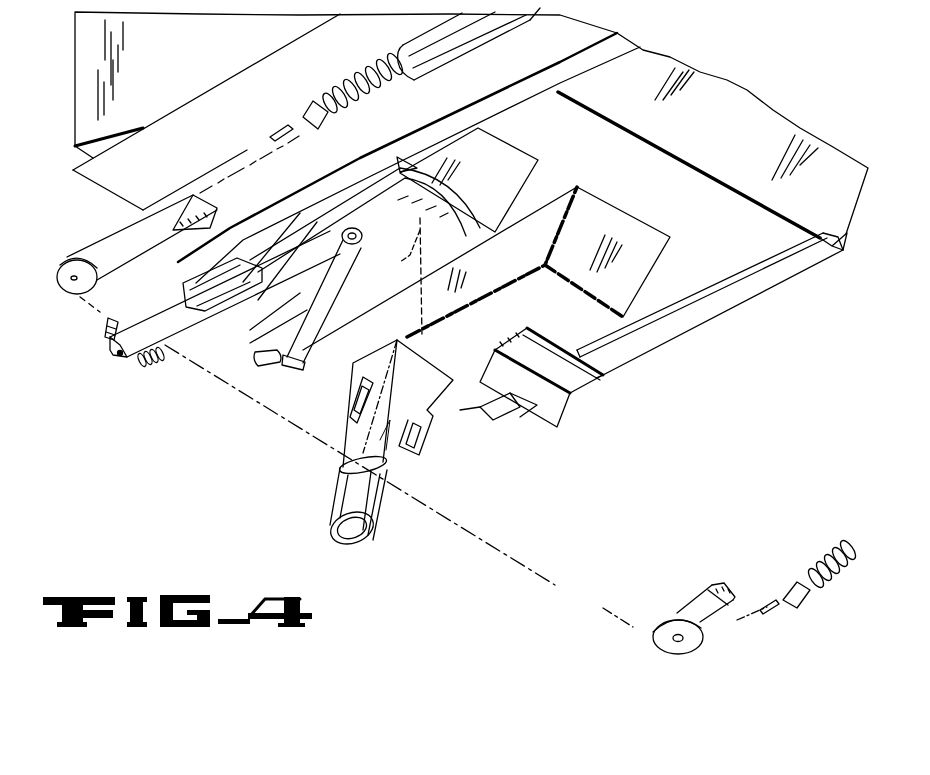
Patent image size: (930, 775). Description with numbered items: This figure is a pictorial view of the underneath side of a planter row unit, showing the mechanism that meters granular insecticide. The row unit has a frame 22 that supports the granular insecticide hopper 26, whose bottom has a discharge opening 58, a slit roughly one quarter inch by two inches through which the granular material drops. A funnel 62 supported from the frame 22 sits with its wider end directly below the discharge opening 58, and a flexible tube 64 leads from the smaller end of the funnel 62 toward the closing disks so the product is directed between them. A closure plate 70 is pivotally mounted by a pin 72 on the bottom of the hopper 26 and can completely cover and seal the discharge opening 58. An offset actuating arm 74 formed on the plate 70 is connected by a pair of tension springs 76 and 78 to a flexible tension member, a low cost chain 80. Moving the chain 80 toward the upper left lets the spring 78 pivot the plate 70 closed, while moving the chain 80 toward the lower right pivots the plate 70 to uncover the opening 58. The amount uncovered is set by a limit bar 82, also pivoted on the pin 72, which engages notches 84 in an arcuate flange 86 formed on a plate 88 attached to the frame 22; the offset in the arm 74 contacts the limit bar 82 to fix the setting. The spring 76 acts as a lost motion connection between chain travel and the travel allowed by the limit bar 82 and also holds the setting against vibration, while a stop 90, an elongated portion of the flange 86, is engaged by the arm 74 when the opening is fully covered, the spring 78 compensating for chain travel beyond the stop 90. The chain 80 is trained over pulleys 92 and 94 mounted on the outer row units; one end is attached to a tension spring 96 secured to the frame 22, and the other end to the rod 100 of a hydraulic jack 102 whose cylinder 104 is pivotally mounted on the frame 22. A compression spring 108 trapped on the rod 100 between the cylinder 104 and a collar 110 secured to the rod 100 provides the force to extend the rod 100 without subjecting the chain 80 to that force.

The frame 22 is at (300, 42).
The second hopper 26 is at (463, 233).
The discharge opening 58 is at (445, 192).
The funnel 62 is at (430, 396).
The flexible tube 64 is at (333, 518).
The closure plate 70 is at (378, 256).
The pin 72 is at (352, 228).
The offset actuating arm 74 is at (117, 356).
The tension spring 76 is at (157, 365).
The tension spring 78 is at (105, 328).
The chain 80 is at (263, 413).
The limit bar 82 is at (305, 316).
The notches 84 is at (258, 360).
The arcuate flange 86 is at (283, 372).
The plate 88 is at (210, 283).
The stop 90 is at (187, 307).
The pulley 92 is at (672, 645).
The pulley 94 is at (55, 260).
The tension spring 96 is at (847, 550).
The rod 100 is at (303, 108).
The hydraulic jack 102 is at (414, 24).
The cylinder 104 is at (483, 41).
The compression spring 108 is at (372, 70).
The collar 110 is at (322, 100).